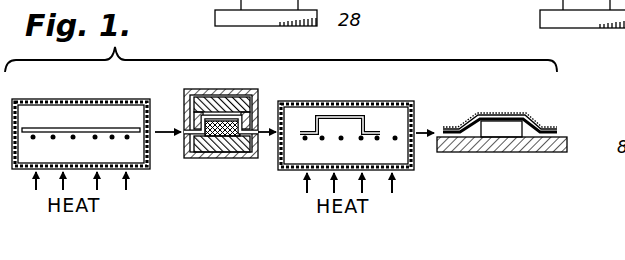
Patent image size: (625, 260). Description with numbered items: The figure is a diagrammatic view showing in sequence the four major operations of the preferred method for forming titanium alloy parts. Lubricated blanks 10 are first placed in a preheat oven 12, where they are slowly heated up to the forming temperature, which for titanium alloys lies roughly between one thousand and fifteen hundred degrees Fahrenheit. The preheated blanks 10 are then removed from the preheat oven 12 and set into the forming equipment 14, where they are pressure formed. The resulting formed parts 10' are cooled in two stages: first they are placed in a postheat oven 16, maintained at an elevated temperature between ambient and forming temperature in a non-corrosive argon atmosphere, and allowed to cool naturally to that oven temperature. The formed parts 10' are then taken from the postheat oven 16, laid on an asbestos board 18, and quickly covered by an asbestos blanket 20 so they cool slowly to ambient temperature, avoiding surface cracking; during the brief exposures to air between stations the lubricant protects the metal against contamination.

The blank 10 is at (81, 123).
The formed part 10' is at (406, 105).
The preheat oven 12 is at (130, 80).
The forming equipment 14 is at (216, 160).
The postheat oven 16 is at (383, 101).
The asbestos board 18 is at (493, 146).
The asbestos blanket 20 is at (538, 125).